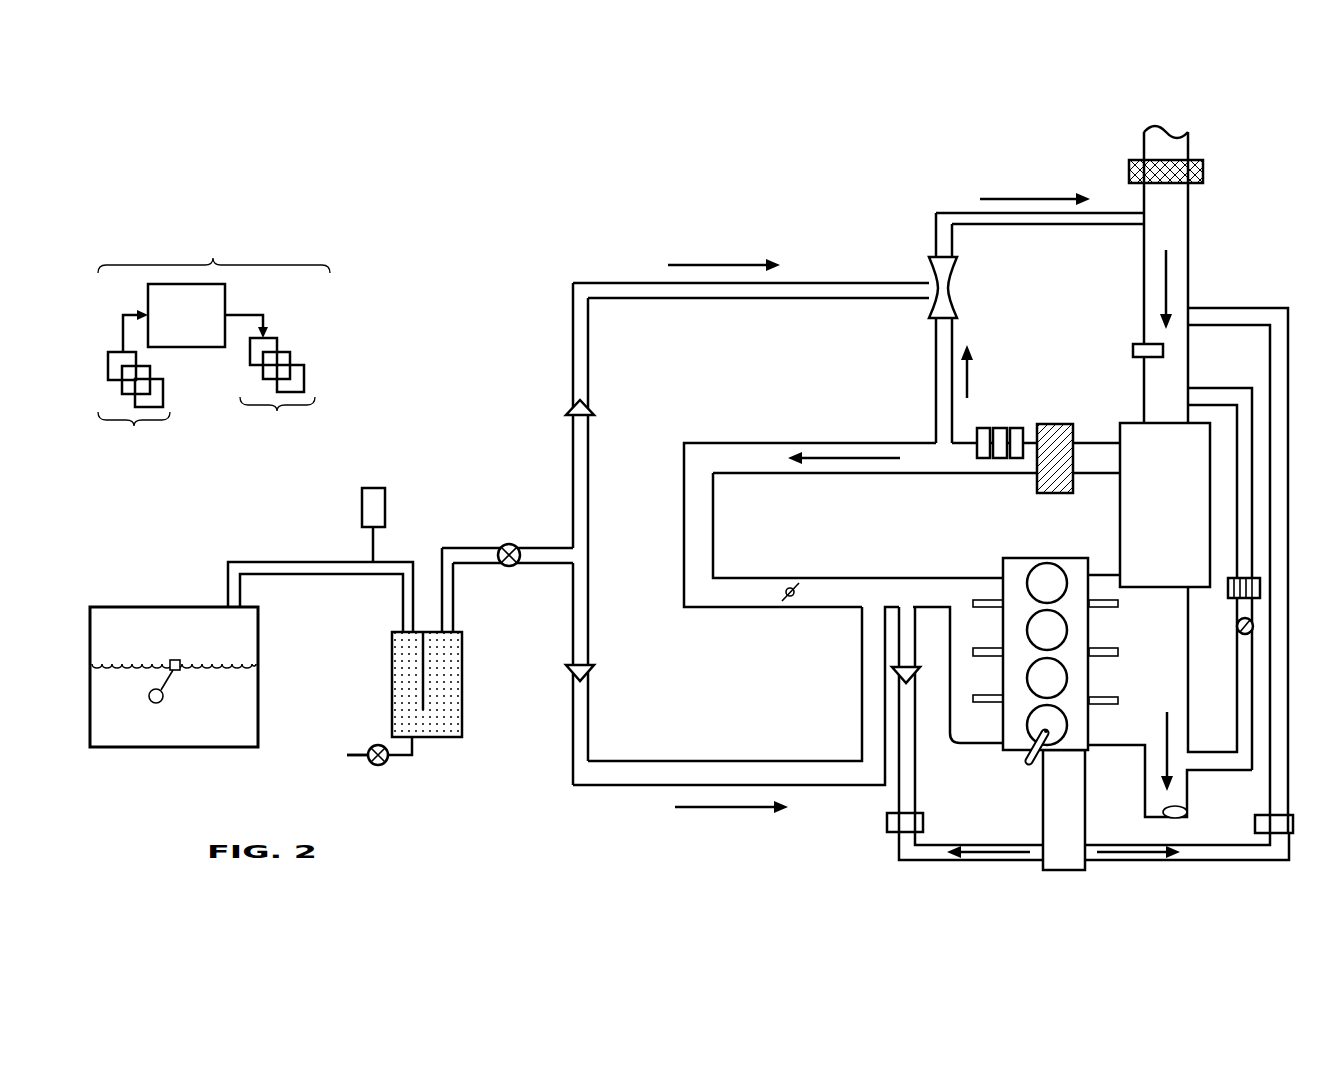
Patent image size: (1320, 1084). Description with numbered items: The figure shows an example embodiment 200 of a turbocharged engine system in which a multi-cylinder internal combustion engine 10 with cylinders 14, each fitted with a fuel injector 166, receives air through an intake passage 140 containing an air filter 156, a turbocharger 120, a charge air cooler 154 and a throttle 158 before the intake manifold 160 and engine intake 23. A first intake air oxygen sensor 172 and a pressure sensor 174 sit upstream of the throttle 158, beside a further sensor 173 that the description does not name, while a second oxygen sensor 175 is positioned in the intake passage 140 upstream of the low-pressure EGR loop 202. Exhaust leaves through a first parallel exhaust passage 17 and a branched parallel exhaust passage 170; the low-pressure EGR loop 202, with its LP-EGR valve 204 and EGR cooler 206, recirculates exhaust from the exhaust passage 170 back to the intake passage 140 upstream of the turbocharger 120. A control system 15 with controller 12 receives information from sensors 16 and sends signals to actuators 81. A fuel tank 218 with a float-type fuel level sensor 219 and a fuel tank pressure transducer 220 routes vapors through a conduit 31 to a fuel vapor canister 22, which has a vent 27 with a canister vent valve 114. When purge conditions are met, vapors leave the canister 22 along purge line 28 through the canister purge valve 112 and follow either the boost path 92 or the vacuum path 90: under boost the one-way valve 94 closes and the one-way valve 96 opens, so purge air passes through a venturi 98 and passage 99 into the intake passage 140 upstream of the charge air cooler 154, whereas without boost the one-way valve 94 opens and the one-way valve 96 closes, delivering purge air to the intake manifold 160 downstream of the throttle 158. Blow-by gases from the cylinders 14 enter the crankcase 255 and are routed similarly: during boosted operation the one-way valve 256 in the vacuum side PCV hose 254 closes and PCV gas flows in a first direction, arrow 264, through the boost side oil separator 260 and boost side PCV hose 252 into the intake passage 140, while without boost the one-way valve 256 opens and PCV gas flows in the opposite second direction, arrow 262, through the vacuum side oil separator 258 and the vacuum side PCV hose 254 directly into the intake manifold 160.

The embodiment 200 is at (190, 172).
The control system 15 is at (214, 339).
The controller 12 is at (186, 315).
The sensors 16 is at (134, 386).
The actuators 81 is at (270, 382).
The fuel tank 218 is at (258, 707).
The fuel level sensor 219 is at (181, 671).
The conduit 31 is at (255, 561).
The fuel tank pressure transducer 220 is at (385, 498).
The fuel vapor canister 22 is at (448, 737).
The canister vent valve 114 is at (383, 765).
The vent 27 is at (345, 755).
The purge line 28 is at (532, 548).
The canister purge valve 112 is at (511, 566).
The boost path 92 is at (718, 300).
The one-way valve 96 is at (587, 402).
The one-way valve 94 is at (590, 670).
The vacuum path 90 is at (690, 762).
The engine intake 23 is at (798, 402).
The throttle 158 is at (793, 598).
The intake manifold 160 is at (977, 630).
The vacuum side PCV hose 254 is at (915, 758).
The one-way valve 256 is at (912, 677).
The vacuum side oil separator 258 is at (887, 832).
The arrow 262 is at (972, 846).
The arrow 264 is at (1110, 850).
The crankcase 255 is at (1064, 810).
The boost side oil separator 260 is at (1255, 826).
The engine 10 is at (976, 755).
The cylinder 14 is at (1063, 577).
The fuel injector 166 is at (1027, 762).
The first parallel exhaust passage 17 is at (1180, 712).
The branched parallel exhaust passage 170 is at (1187, 806).
The turbocharger 120 is at (1165, 505).
The charge air cooler 154 is at (1058, 425).
The intake gas oxygen sensor 172 is at (983, 427).
The sensor 173 is at (999, 427).
The pressure sensor 174 is at (1016, 427).
The venturi 98 is at (948, 296).
The passage 99 is at (958, 213).
The intake passage 140 is at (1144, 306).
The air filter 156 is at (1203, 177).
The second oxygen sensor 175 is at (1133, 344).
The boost side PCV hose 252 is at (1207, 308).
The low-pressure EGR loop 202 is at (1213, 388).
The EGR cooler 206 is at (1228, 588).
The LP-EGR valve 204 is at (1238, 627).